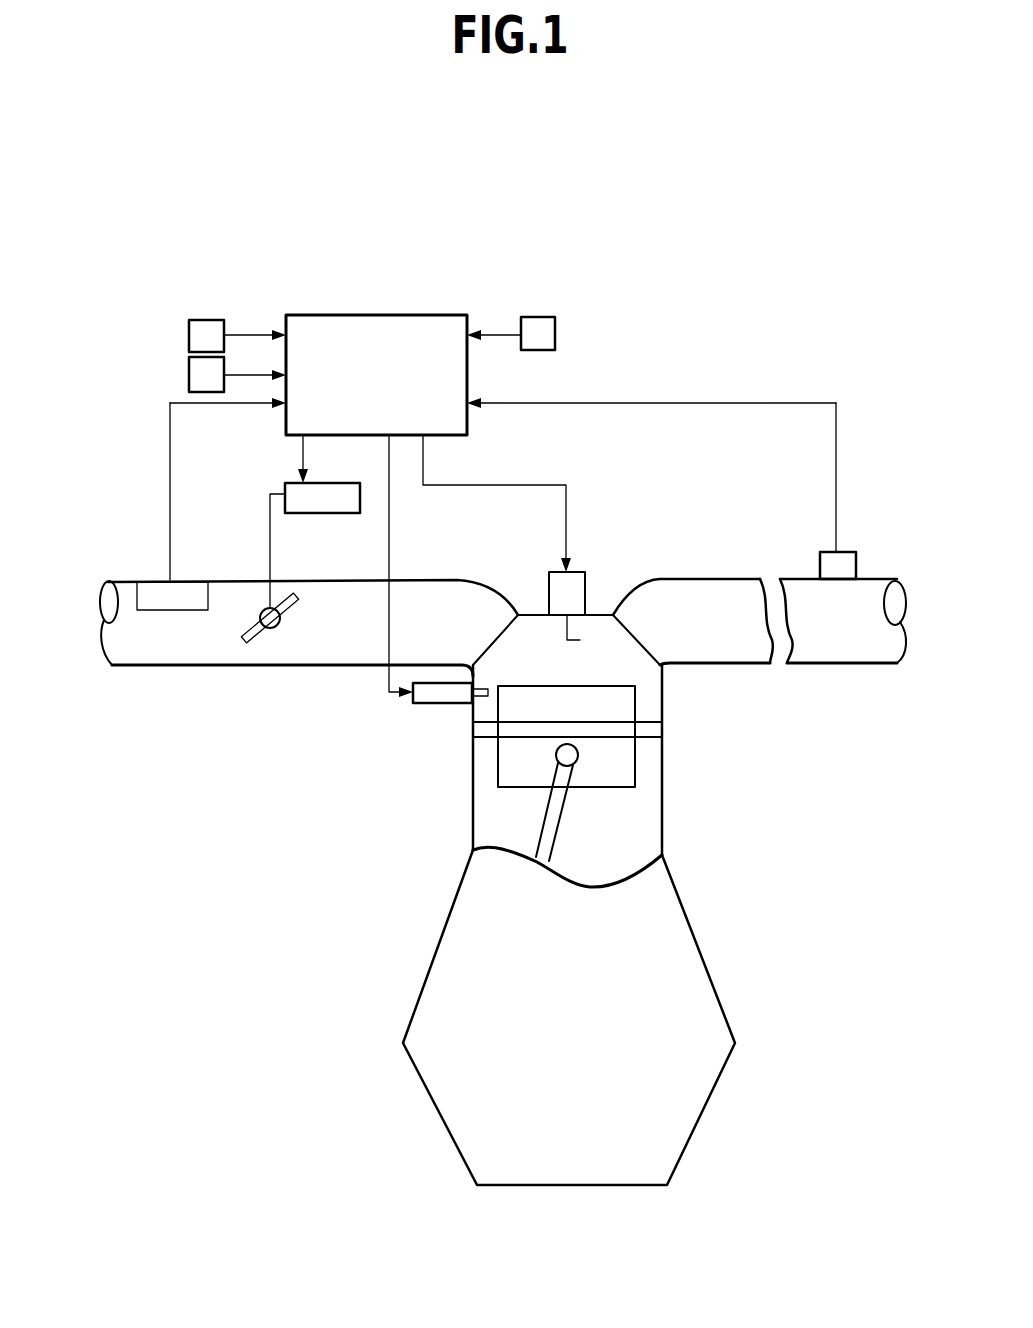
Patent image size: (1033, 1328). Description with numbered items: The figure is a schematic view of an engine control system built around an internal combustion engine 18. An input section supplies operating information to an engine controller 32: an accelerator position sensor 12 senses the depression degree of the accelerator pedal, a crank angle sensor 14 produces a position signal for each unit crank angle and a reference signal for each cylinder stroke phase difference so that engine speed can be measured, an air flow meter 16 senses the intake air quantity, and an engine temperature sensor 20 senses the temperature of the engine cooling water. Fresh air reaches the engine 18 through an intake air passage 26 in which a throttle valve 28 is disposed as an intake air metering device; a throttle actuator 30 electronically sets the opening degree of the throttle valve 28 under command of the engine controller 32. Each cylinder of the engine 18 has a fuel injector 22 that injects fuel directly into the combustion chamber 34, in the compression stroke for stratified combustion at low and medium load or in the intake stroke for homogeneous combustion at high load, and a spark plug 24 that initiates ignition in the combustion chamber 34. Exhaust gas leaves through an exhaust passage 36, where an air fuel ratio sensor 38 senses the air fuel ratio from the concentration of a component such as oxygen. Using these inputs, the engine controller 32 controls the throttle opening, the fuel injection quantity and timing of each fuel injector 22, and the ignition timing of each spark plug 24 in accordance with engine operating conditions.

The accelerator position sensor 12 is at (225, 320).
The crank angle sensor 14 is at (189, 385).
The air flow meter 16 is at (168, 605).
The internal combustion engine 18 is at (684, 814).
The engine temperature sensor 20 is at (555, 332).
The fuel injector 22 is at (443, 703).
The spark plug 24 is at (582, 568).
The intake air passage 26 is at (243, 580).
The throttle valve 28 is at (272, 628).
The throttle actuator 30 is at (315, 513).
The engine controller 32 is at (417, 315).
The combustion chamber 34 is at (578, 664).
The exhaust passage 36 is at (750, 588).
The air fuel ratio sensor 38 is at (842, 572).